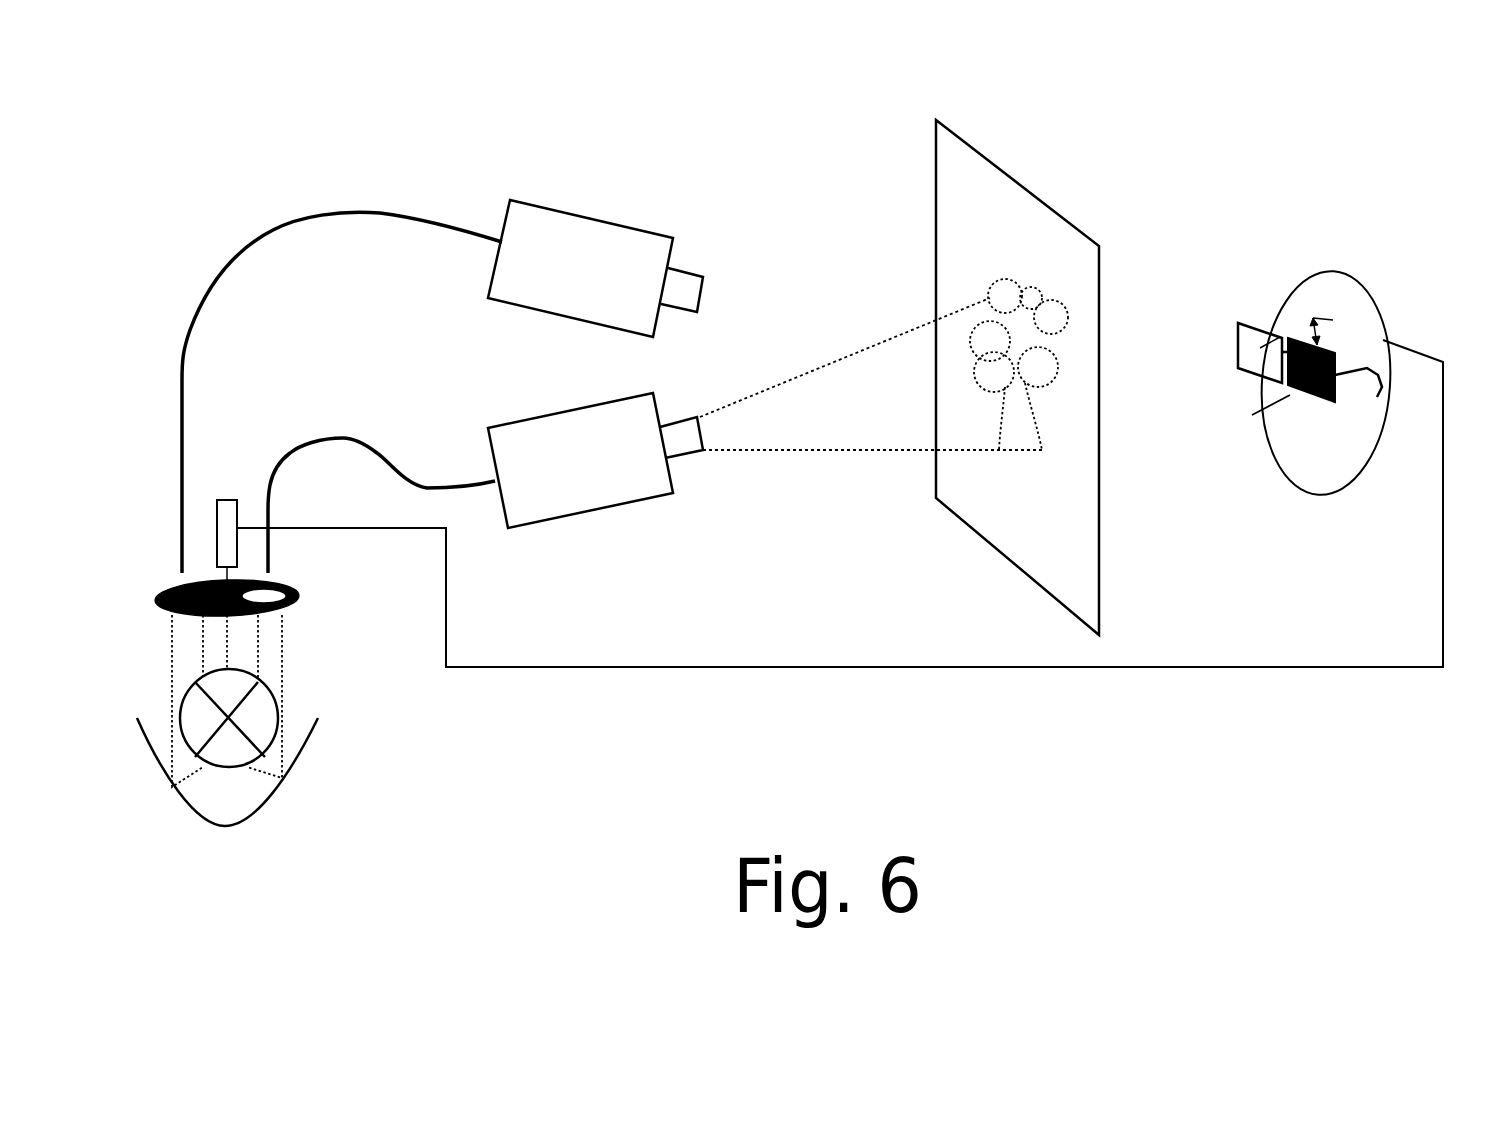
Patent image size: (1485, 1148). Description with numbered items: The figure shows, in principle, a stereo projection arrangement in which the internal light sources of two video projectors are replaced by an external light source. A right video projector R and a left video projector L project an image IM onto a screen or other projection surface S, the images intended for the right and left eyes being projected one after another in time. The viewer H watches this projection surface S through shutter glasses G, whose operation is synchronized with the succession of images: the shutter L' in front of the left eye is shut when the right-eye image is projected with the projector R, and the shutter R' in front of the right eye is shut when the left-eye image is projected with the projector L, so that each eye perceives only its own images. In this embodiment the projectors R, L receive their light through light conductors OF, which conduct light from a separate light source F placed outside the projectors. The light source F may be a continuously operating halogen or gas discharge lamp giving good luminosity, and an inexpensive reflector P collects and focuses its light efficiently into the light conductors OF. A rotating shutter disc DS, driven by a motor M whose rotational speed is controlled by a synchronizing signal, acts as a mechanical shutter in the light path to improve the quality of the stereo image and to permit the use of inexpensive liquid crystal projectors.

The light conductor OF is at (313, 214).
The left video projector L is at (595, 268).
The right video projector R is at (765, 413).
The screen or projection surface S is at (1017, 377).
The image IM is at (1019, 364).
The motor M is at (228, 500).
The shutter disc DS is at (277, 602).
The light source F is at (263, 723).
The reflector P is at (293, 775).
The viewer H is at (1320, 443).
The shutter glasses G is at (1370, 363).
The shutter in front of the right eye R' is at (1314, 281).
The shutter in front of the left eye L' is at (1357, 317).